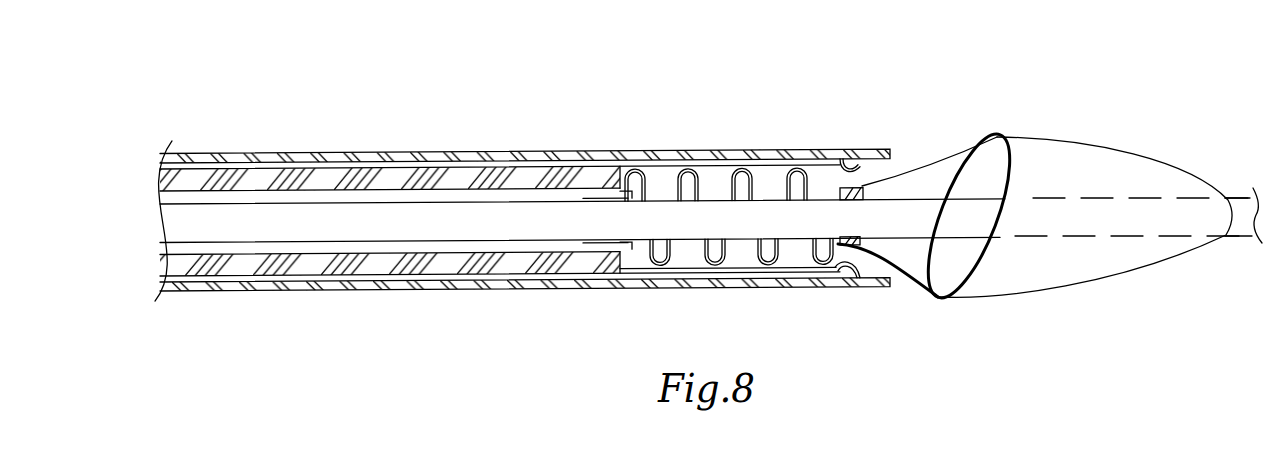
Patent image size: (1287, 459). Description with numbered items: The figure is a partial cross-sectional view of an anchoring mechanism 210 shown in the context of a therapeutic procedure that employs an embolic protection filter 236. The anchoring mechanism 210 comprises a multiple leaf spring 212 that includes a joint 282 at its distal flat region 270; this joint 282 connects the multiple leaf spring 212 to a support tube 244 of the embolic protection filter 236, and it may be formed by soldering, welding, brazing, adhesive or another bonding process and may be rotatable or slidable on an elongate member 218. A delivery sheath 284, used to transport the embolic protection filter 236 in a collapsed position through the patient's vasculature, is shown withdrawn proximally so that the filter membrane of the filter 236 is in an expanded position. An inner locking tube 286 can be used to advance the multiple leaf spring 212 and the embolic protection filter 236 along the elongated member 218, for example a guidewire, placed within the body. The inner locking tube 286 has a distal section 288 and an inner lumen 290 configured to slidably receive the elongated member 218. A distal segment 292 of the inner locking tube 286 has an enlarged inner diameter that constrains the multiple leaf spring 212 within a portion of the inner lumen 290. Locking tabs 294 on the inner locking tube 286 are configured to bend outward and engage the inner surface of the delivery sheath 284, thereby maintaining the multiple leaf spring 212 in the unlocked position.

The anchoring mechanism 210 is at (671, 110).
The multiple leaf spring 212 is at (713, 191).
The elongate member 218 is at (1242, 227).
The embolic protection filter 236 is at (1100, 129).
The support tube 244 is at (950, 160).
The distal flat region 270 is at (815, 150).
The joint 282 is at (864, 190).
The delivery sheath 284 is at (620, 288).
The inner locking tube 286 is at (390, 177).
The distal section 288 is at (512, 263).
The inner lumen 290 is at (450, 197).
The distal segment 292 is at (745, 272).
The locking tab 294 is at (848, 162).